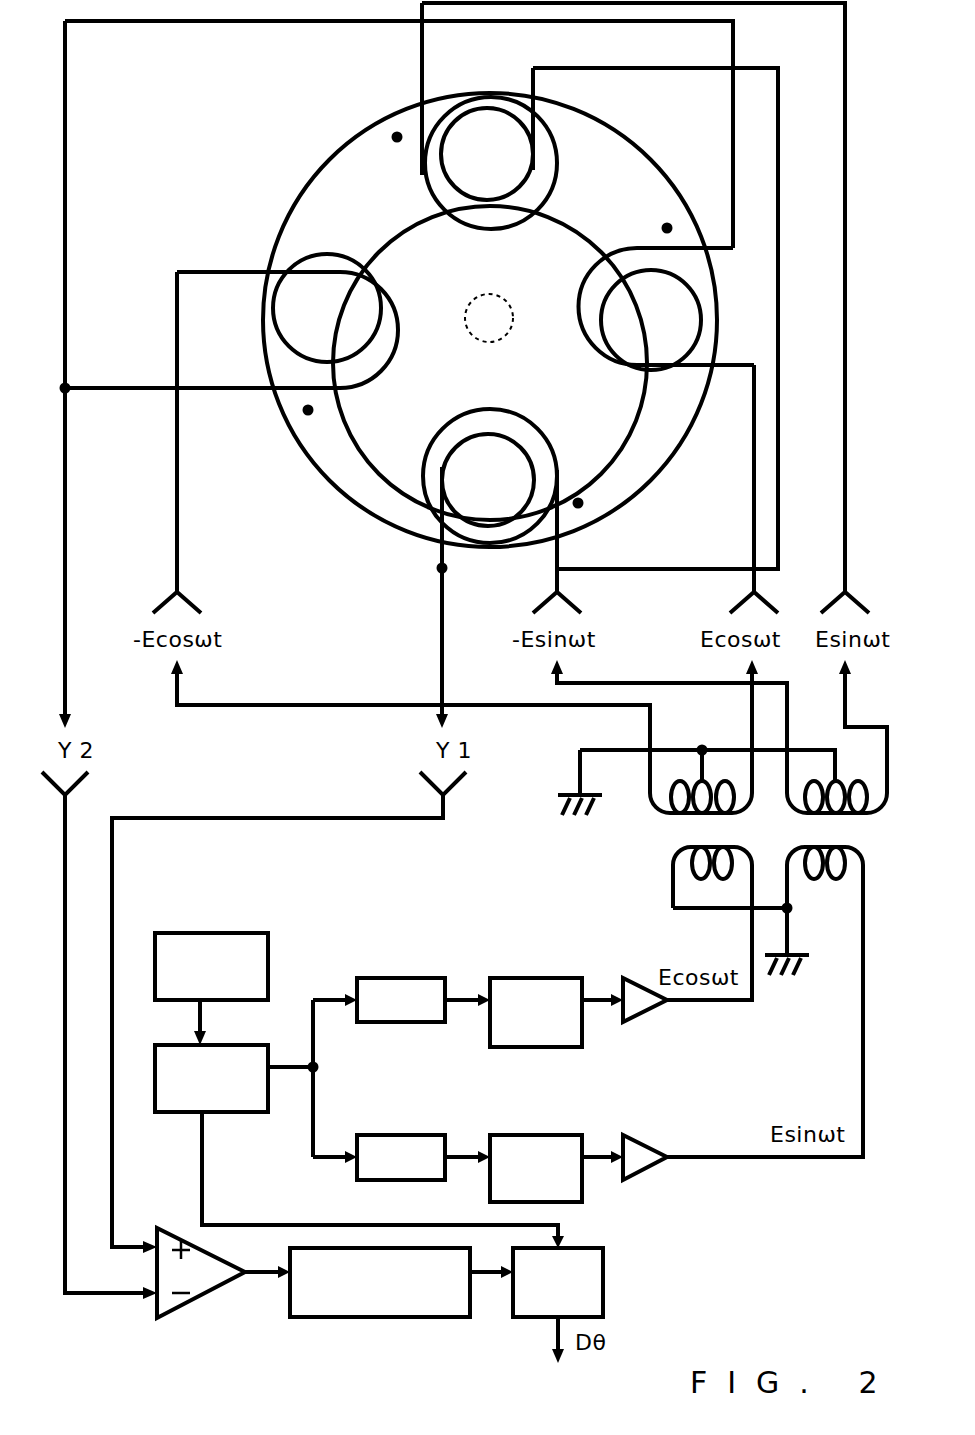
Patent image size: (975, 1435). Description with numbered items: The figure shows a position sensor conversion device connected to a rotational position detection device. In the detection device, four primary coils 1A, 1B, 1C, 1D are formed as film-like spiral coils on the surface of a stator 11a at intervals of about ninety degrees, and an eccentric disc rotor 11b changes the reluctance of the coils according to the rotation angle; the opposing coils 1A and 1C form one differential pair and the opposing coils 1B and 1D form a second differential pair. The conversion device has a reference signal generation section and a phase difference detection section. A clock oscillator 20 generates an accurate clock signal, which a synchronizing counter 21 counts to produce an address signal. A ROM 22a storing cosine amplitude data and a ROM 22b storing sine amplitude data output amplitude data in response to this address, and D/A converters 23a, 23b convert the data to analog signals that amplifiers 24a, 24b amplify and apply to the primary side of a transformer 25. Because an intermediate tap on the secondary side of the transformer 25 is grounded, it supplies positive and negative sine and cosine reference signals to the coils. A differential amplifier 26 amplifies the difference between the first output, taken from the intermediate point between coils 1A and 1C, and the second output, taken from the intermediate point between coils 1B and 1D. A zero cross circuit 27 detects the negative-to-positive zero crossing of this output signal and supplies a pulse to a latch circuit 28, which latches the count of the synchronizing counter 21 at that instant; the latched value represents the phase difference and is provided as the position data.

The primary coil 1A is at (486, 157).
The primary coil 1B is at (643, 315).
The primary coil 1C is at (490, 480).
The primary coil 1D is at (336, 318).
The stator 11a is at (312, 178).
The rotor 11b is at (600, 487).
The clock oscillator 20 is at (268, 953).
The synchronizing counter 21 is at (247, 1113).
The ROM 22a is at (418, 976).
The ROM 22b is at (395, 1134).
The D/A converter 23a is at (535, 976).
The D/A converter 23b is at (533, 1134).
The amplifier 24a is at (622, 976).
The amplifier 24b is at (622, 1134).
The transformer 25 is at (668, 843).
The differential amplifier 26 is at (157, 1228).
The zero cross circuit 27 is at (360, 1317).
The latch circuit 28 is at (604, 1272).